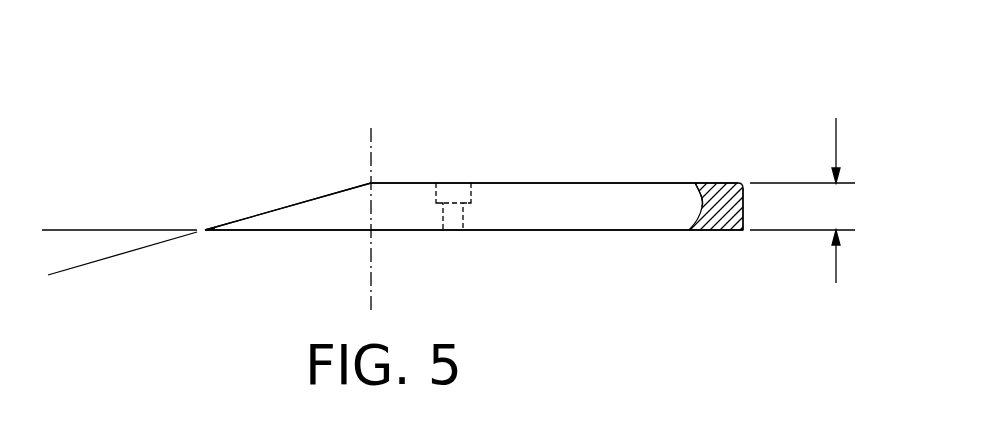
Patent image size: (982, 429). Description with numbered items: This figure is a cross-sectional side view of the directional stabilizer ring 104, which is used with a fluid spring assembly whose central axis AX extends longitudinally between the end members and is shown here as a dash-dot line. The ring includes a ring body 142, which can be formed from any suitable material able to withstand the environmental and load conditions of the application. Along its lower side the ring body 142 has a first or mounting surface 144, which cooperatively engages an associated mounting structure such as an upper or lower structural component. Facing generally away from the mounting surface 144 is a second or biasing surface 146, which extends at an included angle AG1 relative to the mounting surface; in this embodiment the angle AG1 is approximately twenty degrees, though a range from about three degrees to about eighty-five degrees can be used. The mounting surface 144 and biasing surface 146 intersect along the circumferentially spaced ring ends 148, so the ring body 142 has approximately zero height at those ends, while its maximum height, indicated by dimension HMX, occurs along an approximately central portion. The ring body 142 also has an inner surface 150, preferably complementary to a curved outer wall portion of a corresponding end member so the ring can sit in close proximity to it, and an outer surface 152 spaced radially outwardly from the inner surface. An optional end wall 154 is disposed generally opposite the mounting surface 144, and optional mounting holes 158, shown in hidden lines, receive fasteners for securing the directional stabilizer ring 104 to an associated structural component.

The directional stabilizer ring 104 is at (751, 160).
The ring body 142 is at (722, 183).
The mounting surface 144 is at (615, 231).
The biasing surface 146 is at (275, 207).
The ring ends 148 is at (206, 233).
The inner surface 150 is at (700, 206).
The outer surface 152 is at (745, 205).
The end wall 154 is at (535, 183).
The mounting holes 158 is at (457, 195).
The central axis AX is at (371, 143).
The included angle AG1 is at (85, 338).
The maximum height HMX is at (806, 185).